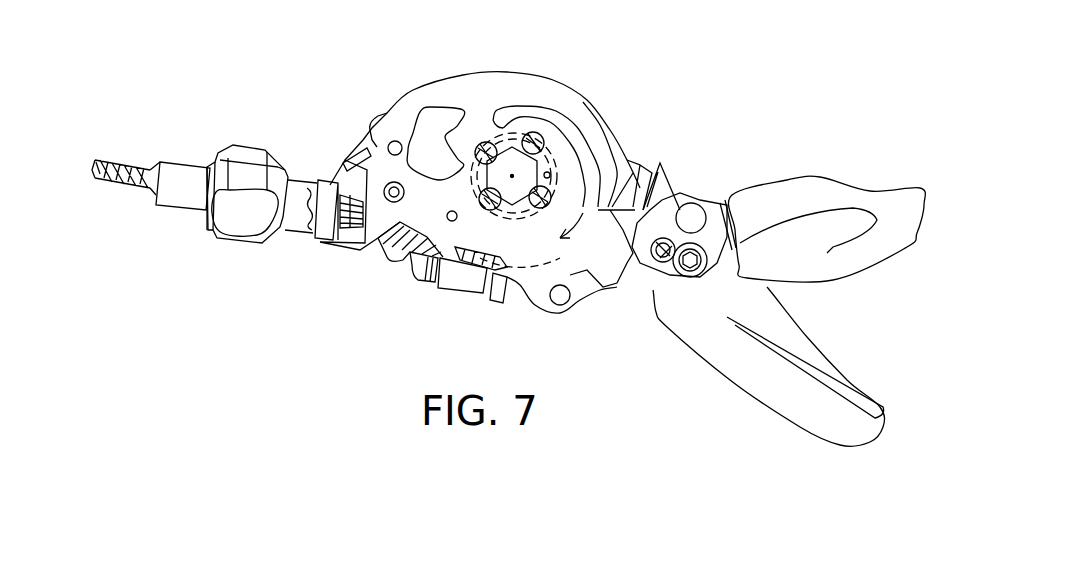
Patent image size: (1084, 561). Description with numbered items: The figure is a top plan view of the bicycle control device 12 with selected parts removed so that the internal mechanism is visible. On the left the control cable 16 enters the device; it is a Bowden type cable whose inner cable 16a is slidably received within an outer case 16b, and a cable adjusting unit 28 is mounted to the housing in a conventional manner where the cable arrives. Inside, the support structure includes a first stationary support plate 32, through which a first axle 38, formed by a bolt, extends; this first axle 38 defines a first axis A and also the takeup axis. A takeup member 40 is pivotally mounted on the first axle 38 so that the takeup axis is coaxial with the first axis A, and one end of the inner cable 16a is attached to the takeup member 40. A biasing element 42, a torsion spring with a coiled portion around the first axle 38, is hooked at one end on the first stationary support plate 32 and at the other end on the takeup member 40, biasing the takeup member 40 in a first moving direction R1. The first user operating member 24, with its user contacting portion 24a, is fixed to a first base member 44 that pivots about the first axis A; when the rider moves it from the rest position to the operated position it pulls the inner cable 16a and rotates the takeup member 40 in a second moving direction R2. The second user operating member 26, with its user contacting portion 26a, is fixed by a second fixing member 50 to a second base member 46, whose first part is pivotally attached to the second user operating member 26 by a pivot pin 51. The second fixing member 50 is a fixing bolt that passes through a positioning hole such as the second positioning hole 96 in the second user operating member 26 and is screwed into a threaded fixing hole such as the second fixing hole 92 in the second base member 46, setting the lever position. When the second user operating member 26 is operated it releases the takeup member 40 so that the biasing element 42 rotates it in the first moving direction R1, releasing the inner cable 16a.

The bicycle control device 12 is at (718, 38).
The control cable 16 is at (172, 210).
The inner cable 16a is at (122, 166).
The outer case 16b is at (182, 165).
The first user operating member 24 is at (720, 380).
The user contacting portion 24a is at (775, 418).
The second user operating member 26 is at (802, 185).
The user contacting portion 26a is at (875, 195).
The cable adjusting unit 28 is at (258, 145).
The first stationary support plate 32 is at (367, 173).
The first axle 38 is at (497, 140).
The takeup member 40 is at (509, 70).
The biasing element 42 is at (545, 125).
The first base member 44 is at (392, 113).
The second base member 46 is at (625, 200).
The second fixing member 50 is at (694, 278).
The pivot pin 51 is at (693, 208).
The second fixing hole 92 is at (650, 205).
The second positioning hole 96 is at (650, 270).
The first axis A is at (510, 177).
The first moving direction R1 is at (557, 248).
The second moving direction R2 is at (437, 148).